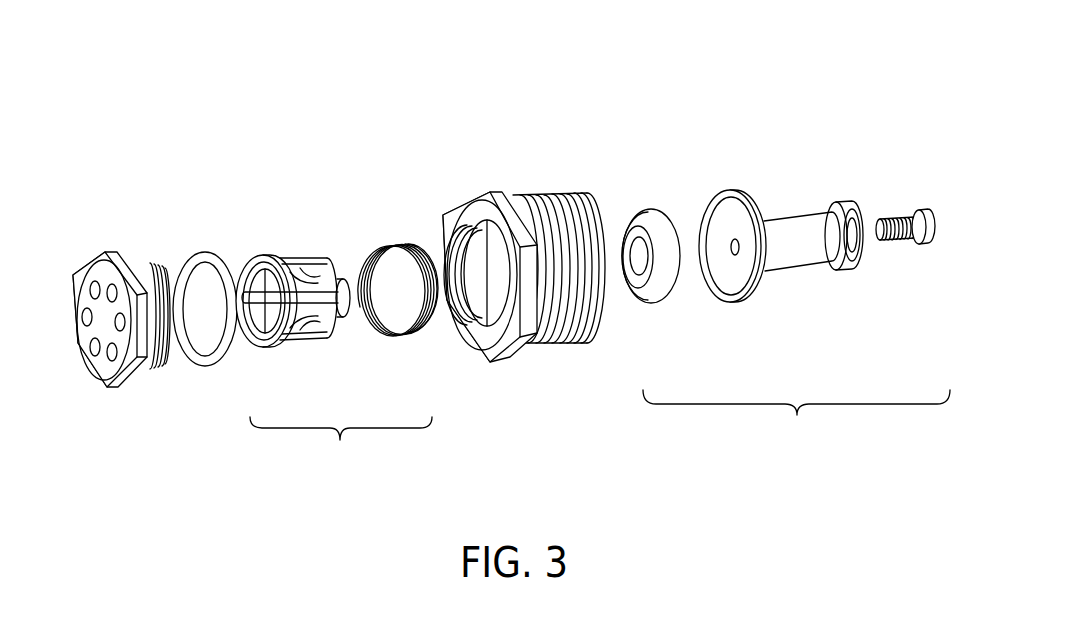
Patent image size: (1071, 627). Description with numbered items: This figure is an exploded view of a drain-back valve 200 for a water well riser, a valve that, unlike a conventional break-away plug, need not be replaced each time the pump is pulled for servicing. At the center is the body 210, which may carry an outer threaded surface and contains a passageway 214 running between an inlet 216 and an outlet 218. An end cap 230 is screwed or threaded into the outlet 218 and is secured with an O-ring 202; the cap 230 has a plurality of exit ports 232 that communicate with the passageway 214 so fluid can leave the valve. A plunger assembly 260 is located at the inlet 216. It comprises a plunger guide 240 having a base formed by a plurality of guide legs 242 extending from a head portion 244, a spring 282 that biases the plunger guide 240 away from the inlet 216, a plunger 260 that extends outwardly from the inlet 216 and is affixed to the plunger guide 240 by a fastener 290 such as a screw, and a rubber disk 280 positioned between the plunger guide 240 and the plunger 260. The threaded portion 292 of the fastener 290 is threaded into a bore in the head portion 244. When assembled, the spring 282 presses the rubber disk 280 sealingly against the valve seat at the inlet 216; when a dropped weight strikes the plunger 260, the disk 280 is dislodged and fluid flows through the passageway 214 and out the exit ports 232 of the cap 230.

The drain-back valve 200 is at (632, 67).
The O-ring 202 is at (197, 252).
The body 210 is at (520, 298).
The passageway 214 is at (493, 268).
The inlet 216 is at (590, 208).
The outlet 218 is at (488, 327).
The end cap 230 is at (120, 388).
The exit ports 232 is at (92, 346).
The plunger guide 240 is at (303, 260).
The guide legs 242 is at (297, 333).
The head portion 244 is at (337, 278).
The plunger assembly 260 is at (802, 193).
The rubber disk 280 is at (663, 303).
The spring 282 is at (387, 328).
The fastener 290 is at (910, 245).
The threaded portion 292 is at (897, 217).